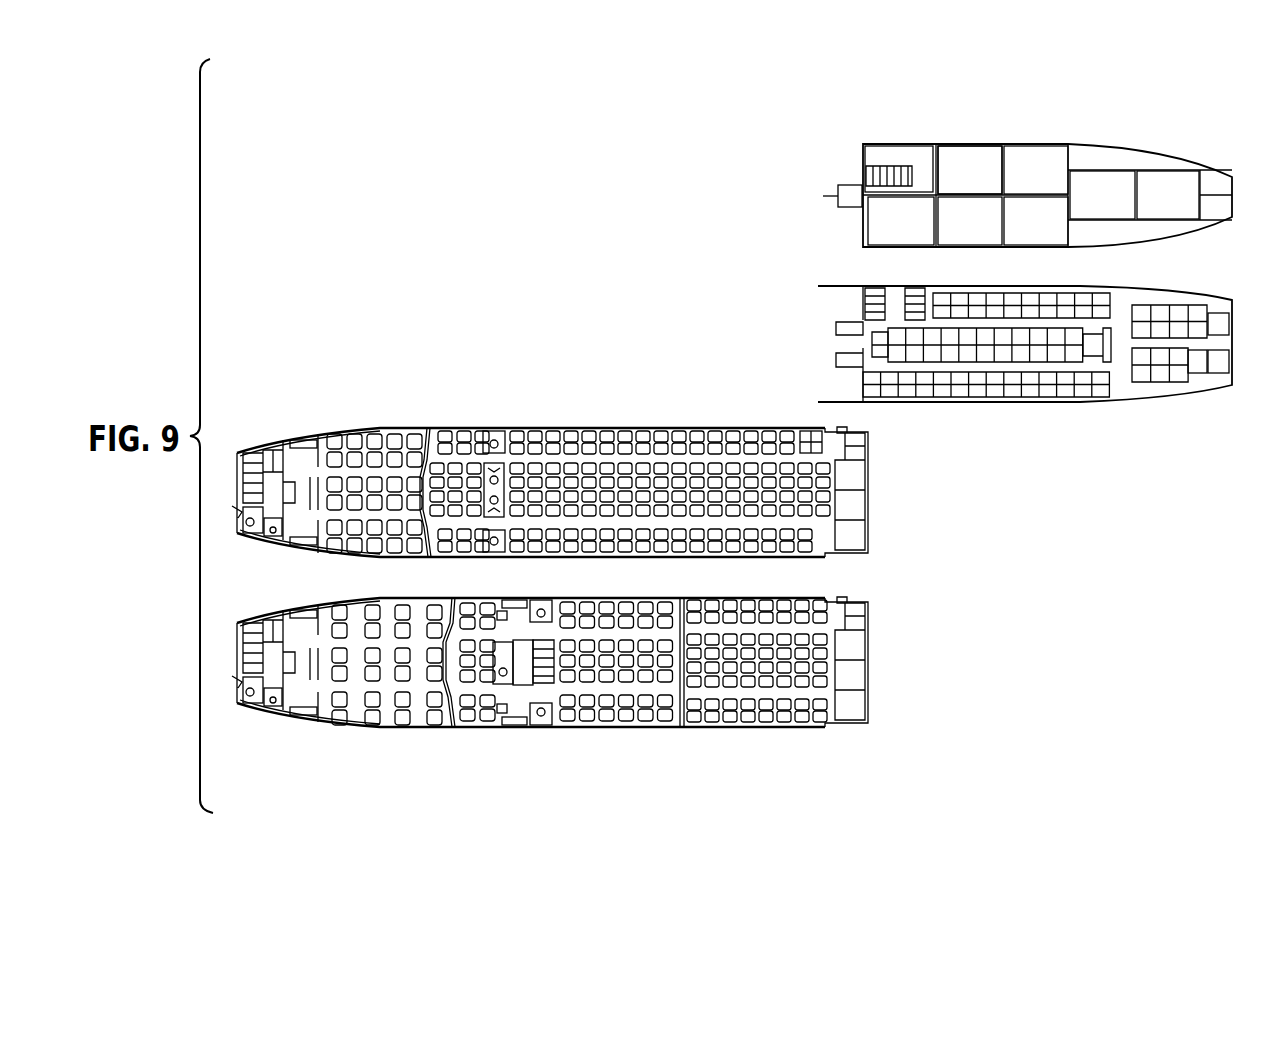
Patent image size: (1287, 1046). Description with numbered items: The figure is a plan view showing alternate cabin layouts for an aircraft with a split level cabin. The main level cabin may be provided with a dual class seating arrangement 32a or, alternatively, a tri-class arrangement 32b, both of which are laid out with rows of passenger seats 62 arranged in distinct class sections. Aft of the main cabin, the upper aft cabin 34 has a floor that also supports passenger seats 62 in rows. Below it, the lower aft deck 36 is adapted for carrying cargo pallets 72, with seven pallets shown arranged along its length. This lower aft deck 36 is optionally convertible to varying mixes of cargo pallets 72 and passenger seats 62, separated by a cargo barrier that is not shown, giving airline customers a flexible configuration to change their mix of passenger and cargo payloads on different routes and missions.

The dual class seating arrangement 32a is at (313, 400).
The tri-class arrangement 32b is at (338, 750).
The upper aft cabin 34 is at (1168, 413).
The lower aft cabin 36 is at (1142, 128).
The passenger seats 62 is at (640, 480).
The cargo pallets 72 is at (968, 160).